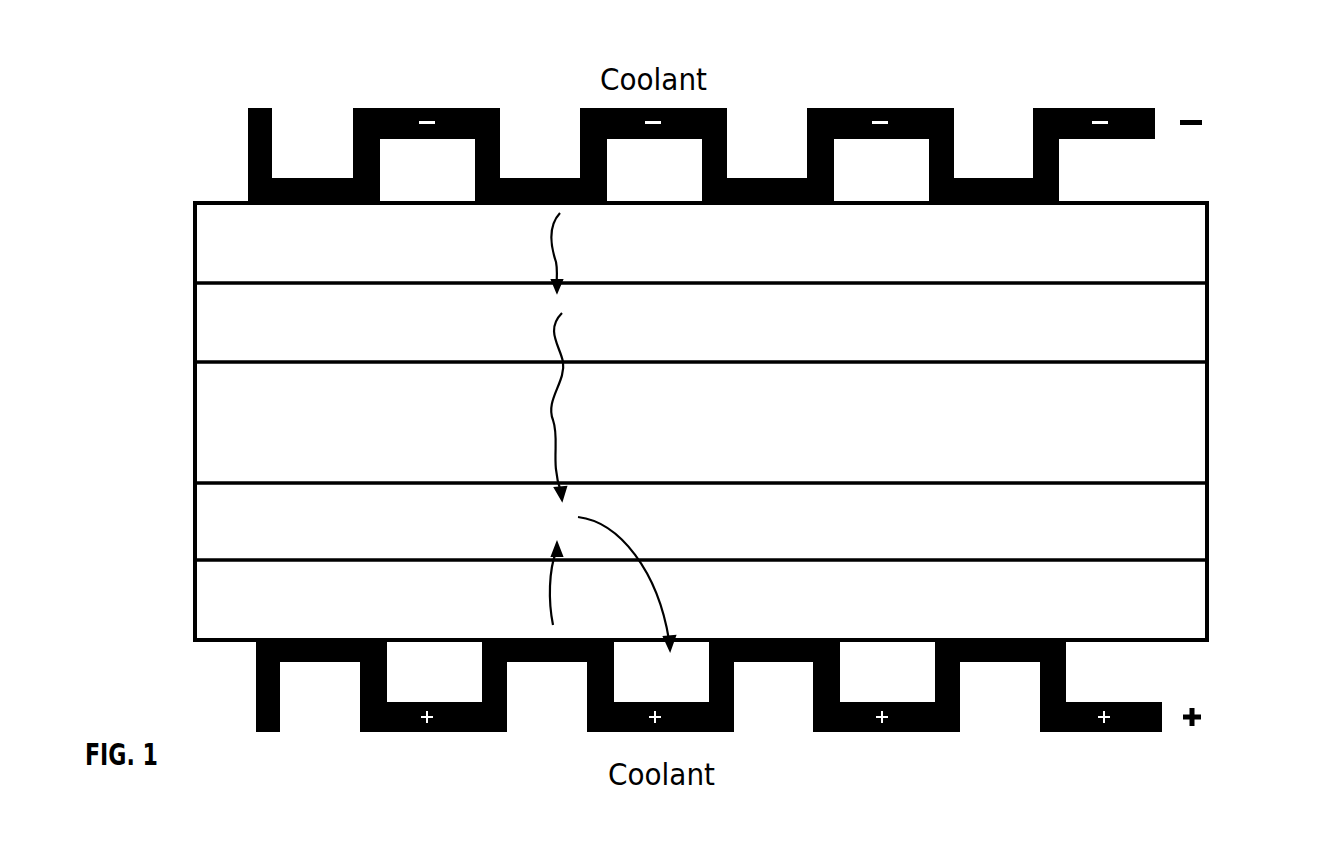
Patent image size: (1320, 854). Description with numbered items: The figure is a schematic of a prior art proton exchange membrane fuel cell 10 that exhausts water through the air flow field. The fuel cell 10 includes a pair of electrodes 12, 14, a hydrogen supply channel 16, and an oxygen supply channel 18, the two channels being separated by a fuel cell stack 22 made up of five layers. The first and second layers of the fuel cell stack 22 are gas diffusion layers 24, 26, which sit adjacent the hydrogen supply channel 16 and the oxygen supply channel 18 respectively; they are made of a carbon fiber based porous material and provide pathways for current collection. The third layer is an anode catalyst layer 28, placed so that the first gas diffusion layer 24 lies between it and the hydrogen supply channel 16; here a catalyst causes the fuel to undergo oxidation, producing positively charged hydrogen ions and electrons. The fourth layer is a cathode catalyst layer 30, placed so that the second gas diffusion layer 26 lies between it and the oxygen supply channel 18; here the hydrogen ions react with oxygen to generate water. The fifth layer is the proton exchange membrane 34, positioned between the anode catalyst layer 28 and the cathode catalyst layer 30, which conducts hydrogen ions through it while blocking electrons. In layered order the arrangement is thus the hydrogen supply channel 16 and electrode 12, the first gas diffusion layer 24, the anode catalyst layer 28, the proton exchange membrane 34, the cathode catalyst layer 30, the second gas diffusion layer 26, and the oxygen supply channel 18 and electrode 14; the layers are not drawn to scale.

The fuel cell 10 is at (115, 247).
The electrode 12 is at (352, 123).
The electrode 14 is at (387, 732).
The hydrogen supply channel 16 is at (448, 160).
The oxygen supply channel 18 is at (452, 688).
The fuel cell stack 22 is at (178, 203).
The first gas diffusion layer 24 is at (1207, 240).
The second gas diffusion layer 26 is at (1207, 614).
The anode catalyst layer 28 is at (1207, 334).
The cathode catalyst layer 30 is at (1207, 529).
The proton exchange membrane 34 is at (1207, 434).